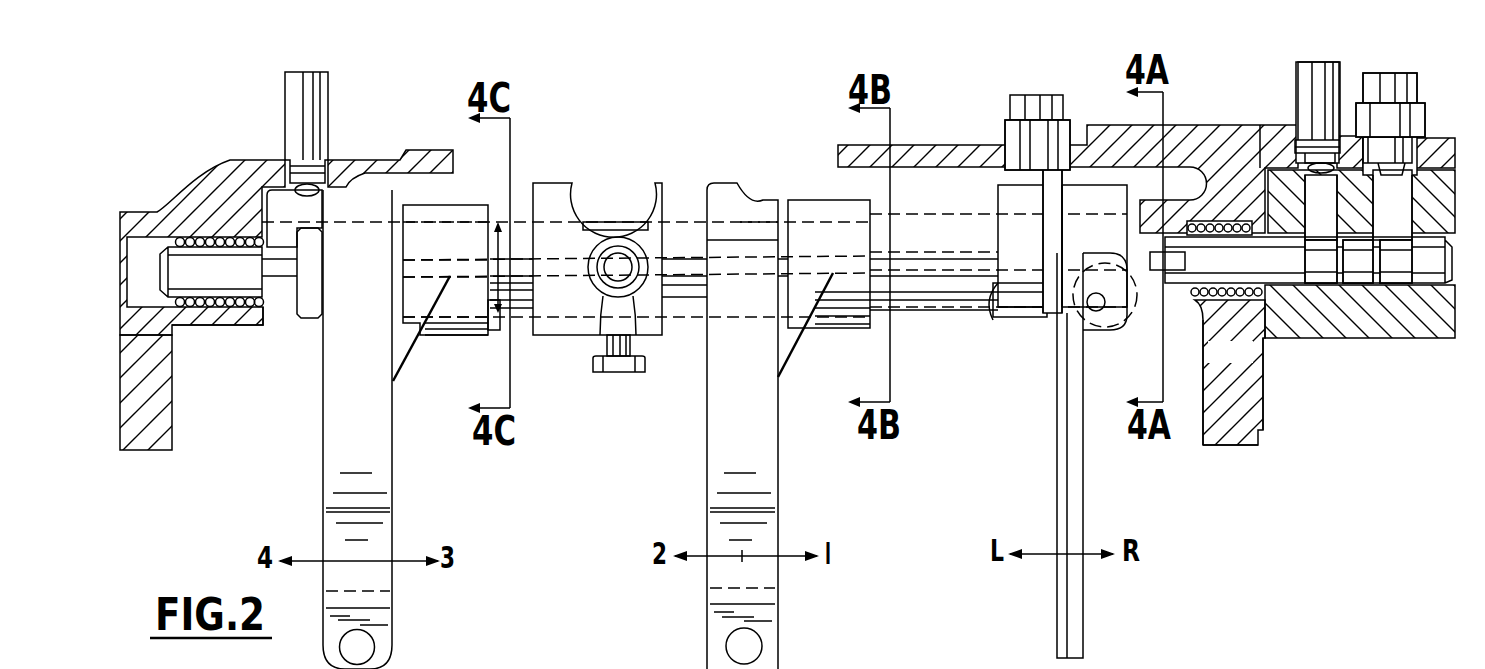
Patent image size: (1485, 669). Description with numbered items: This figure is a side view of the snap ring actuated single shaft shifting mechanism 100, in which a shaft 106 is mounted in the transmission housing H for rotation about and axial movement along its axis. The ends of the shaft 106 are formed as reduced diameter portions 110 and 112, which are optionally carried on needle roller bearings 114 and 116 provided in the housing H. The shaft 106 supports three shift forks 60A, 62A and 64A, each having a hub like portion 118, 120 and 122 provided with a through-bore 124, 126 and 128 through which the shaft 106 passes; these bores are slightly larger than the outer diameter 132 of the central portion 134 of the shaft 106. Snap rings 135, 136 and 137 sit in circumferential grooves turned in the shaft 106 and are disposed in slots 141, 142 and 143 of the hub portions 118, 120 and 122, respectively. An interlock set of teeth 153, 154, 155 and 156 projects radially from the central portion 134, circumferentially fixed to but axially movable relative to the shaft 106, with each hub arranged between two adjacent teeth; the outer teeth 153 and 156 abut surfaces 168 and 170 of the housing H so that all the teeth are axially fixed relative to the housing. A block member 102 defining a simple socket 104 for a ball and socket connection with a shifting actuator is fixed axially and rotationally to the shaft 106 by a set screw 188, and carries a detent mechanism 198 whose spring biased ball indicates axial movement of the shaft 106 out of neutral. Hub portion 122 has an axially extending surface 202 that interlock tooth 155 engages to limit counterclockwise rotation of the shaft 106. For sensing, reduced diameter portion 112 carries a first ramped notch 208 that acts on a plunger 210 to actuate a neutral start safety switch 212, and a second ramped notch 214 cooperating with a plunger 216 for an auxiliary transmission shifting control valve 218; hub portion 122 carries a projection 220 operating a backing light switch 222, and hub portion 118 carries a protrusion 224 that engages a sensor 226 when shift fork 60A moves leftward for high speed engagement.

The housing H is at (186, 192).
The shifting mechanism 100 is at (936, 100).
The block member 102 is at (548, 212).
The socket 104 is at (598, 193).
The shaft 106 is at (1303, 258).
The reduced diameter portion 110 is at (263, 270).
The reduced diameter portion 112 is at (1197, 263).
The needle roller bearing 114 is at (218, 233).
The needle roller bearing 116 is at (1213, 221).
The hub portion 118 is at (437, 237).
The hub portion 120 is at (745, 240).
The hub portion 122 is at (1070, 202).
The through-bore 124 is at (458, 220).
The through-bore 126 is at (800, 220).
The through-bore 128 is at (975, 222).
The outer diameter 132 is at (500, 325).
The central portion 134 is at (492, 343).
The snap ring 135 is at (393, 292).
The snap ring 136 is at (782, 290).
The snap ring 137 is at (1043, 263).
The slot 141 is at (390, 207).
The slot 142 is at (762, 222).
The slot 143 is at (1063, 177).
The interlock tooth 153 is at (283, 272).
The interlock tooth 154 is at (688, 267).
The interlock tooth 155 is at (953, 258).
The interlock tooth 156 is at (1152, 312).
The housing surface 168 is at (263, 323).
The housing surface 170 is at (1233, 382).
The set screw 188 is at (618, 357).
The detent mechanism 198 is at (597, 283).
The axially extending surface 202 is at (993, 287).
The first ramped notch 208 is at (1390, 283).
The plunger 210 is at (1450, 167).
The neutral start safety switch 212 is at (1380, 72).
The second ramped notch 214 is at (1318, 283).
The plunger 216 is at (1352, 283).
The auxiliary transmission shifting control valve 218 is at (1297, 87).
The projection 220 is at (1012, 187).
The backing light switch 222 is at (1035, 108).
The protrusion 224 is at (352, 193).
The sensor 226 is at (297, 107).
The shift fork 60A is at (378, 535).
The shift fork 62A is at (782, 523).
The shift fork 64A is at (1080, 517).